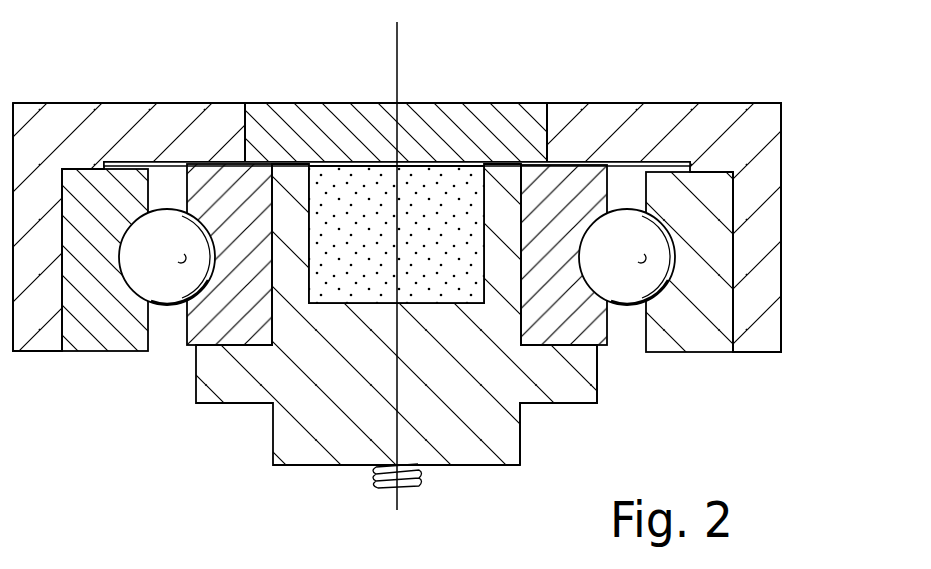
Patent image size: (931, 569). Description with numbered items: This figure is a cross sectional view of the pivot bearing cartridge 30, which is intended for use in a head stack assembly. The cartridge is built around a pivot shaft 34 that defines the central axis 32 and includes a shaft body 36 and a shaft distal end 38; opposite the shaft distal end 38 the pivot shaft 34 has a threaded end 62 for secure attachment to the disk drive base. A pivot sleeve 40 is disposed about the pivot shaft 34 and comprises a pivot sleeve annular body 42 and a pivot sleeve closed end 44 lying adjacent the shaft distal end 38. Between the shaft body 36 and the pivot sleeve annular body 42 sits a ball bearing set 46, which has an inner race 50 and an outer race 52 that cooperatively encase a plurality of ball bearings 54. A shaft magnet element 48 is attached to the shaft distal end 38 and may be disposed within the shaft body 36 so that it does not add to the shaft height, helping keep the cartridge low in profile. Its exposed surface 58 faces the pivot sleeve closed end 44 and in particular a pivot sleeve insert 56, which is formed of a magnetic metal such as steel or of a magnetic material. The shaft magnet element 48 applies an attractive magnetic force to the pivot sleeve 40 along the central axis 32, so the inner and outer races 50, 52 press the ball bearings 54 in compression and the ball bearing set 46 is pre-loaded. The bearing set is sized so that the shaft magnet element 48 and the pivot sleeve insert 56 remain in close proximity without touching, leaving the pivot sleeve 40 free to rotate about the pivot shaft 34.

The pivot bearing cartridge 30 is at (180, 66).
The central axis 32 is at (403, 50).
The pivot shaft 34 is at (345, 383).
The shaft body 36 is at (502, 285).
The shaft distal end 38 is at (507, 164).
The pivot sleeve 40 is at (778, 123).
The pivot sleeve annular body 42 is at (778, 228).
The pivot sleeve closed end 44 is at (597, 113).
The ball bearing set 46 is at (272, 361).
The shaft magnet element 48 is at (340, 187).
The inner race 50 is at (592, 192).
The outer race 52 is at (710, 172).
The ball bearings 54 is at (637, 298).
The pivot sleeve insert 56 is at (368, 108).
The exposed surface 58 is at (445, 164).
The threaded end 62 is at (422, 472).